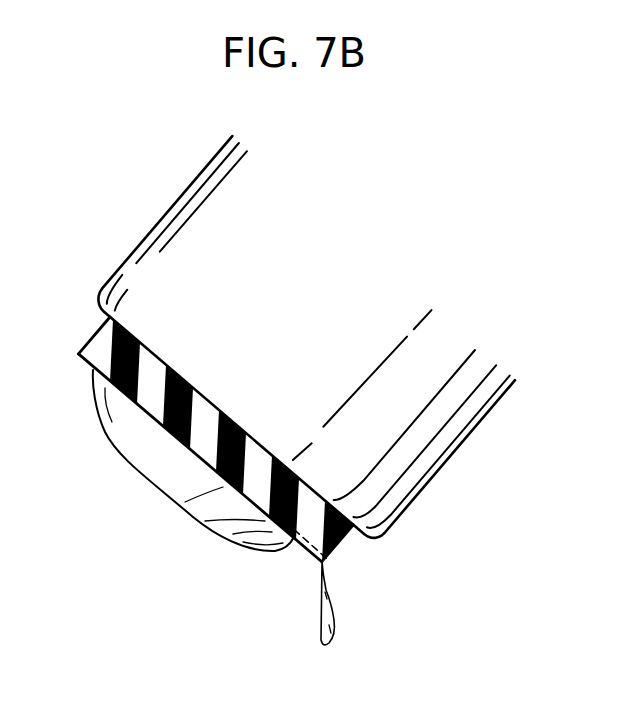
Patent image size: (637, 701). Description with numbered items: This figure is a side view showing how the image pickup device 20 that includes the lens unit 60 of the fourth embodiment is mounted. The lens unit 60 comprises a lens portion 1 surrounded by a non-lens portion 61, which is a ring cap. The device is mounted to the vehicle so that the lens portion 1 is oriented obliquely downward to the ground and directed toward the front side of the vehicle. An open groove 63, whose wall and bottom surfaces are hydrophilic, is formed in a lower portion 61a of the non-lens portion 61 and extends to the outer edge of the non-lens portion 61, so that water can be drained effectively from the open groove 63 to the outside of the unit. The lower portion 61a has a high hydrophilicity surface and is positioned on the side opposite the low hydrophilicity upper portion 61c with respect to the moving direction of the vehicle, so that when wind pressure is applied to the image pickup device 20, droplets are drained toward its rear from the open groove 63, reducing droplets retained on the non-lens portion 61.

The image pickup device 20 is at (436, 498).
The lens unit 60 is at (238, 610).
The lens portion 1 is at (157, 470).
The non-lens portion 61 is at (233, 493).
The lower portion 61a is at (298, 552).
The upper portion 61c is at (93, 367).
The open groove 63 is at (322, 564).